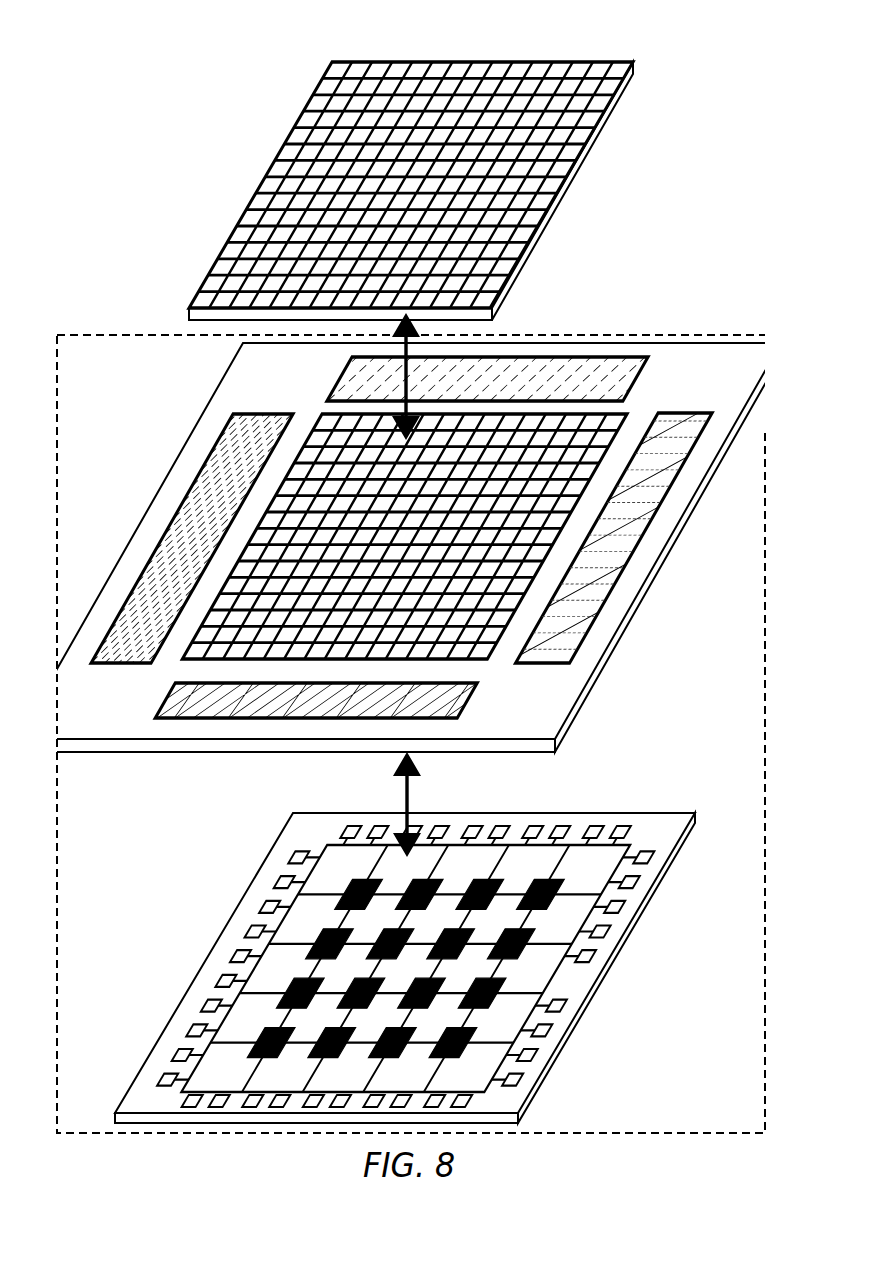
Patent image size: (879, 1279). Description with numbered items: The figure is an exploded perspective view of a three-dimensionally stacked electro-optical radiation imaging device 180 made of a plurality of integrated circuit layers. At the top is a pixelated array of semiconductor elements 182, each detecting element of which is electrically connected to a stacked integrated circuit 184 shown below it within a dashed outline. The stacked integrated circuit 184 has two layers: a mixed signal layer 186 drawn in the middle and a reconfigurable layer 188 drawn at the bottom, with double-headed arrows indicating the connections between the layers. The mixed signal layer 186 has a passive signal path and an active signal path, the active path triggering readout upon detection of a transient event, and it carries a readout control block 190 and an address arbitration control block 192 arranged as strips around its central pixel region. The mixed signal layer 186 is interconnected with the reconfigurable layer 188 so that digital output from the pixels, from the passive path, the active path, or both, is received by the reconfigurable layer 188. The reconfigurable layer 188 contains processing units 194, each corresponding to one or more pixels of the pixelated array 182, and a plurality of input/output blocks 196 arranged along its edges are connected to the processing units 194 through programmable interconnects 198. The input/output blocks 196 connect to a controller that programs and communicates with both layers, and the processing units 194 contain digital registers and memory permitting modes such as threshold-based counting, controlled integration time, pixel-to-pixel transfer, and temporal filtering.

The 3D stacked electro-optical radiation imaging device 180 is at (114, 1158).
The pixelated array of semiconductor elements 182 is at (520, 62).
The stacked integrated circuit 184 is at (60, 312).
The mixed signal layer 186 is at (178, 659).
The reconfigurable layer 188 is at (612, 813).
The readout control block 190 is at (567, 711).
The address arbitration control block 192 is at (248, 412).
The processing units 194 is at (300, 926).
The input/output (I/O) blocks 196 is at (206, 966).
The programmable interconnects 198 is at (515, 990).